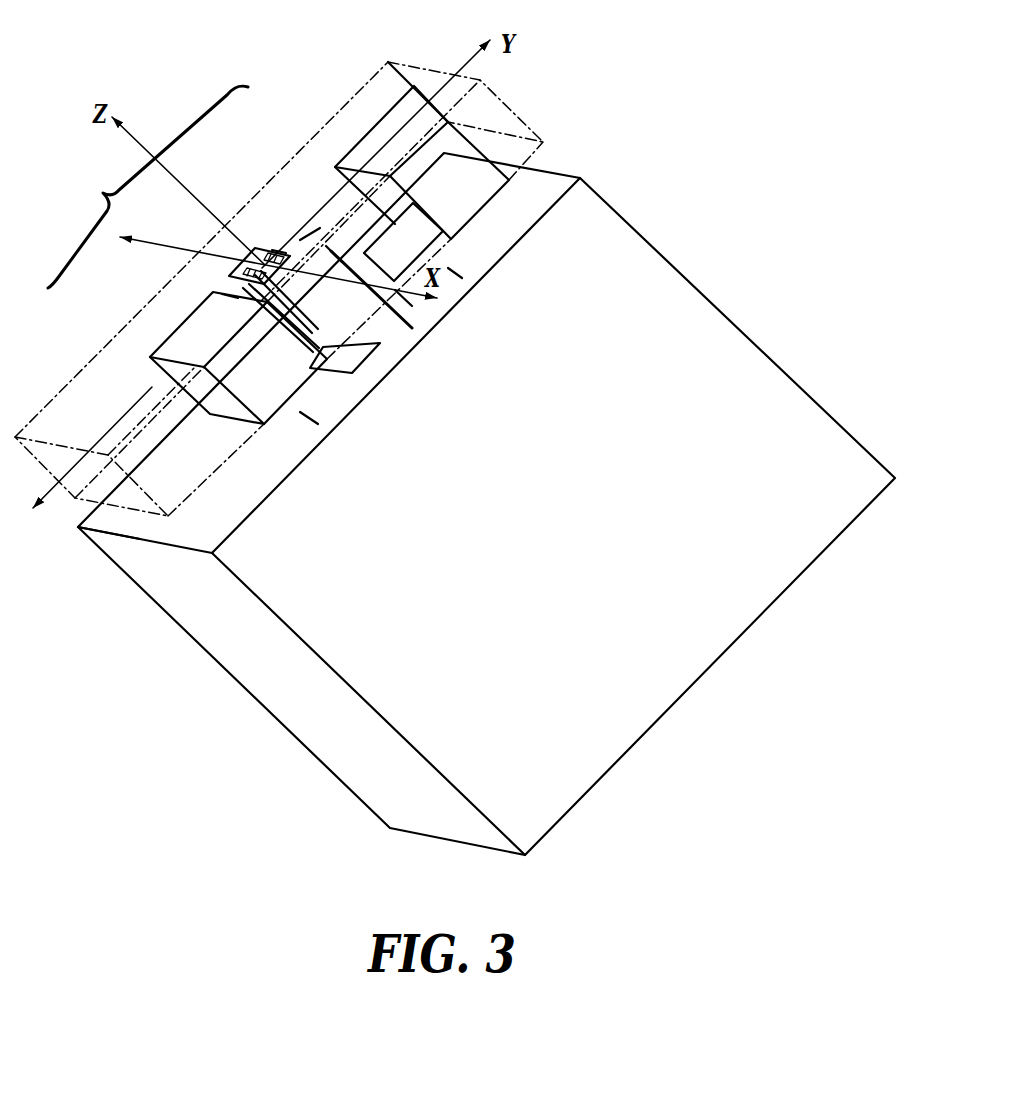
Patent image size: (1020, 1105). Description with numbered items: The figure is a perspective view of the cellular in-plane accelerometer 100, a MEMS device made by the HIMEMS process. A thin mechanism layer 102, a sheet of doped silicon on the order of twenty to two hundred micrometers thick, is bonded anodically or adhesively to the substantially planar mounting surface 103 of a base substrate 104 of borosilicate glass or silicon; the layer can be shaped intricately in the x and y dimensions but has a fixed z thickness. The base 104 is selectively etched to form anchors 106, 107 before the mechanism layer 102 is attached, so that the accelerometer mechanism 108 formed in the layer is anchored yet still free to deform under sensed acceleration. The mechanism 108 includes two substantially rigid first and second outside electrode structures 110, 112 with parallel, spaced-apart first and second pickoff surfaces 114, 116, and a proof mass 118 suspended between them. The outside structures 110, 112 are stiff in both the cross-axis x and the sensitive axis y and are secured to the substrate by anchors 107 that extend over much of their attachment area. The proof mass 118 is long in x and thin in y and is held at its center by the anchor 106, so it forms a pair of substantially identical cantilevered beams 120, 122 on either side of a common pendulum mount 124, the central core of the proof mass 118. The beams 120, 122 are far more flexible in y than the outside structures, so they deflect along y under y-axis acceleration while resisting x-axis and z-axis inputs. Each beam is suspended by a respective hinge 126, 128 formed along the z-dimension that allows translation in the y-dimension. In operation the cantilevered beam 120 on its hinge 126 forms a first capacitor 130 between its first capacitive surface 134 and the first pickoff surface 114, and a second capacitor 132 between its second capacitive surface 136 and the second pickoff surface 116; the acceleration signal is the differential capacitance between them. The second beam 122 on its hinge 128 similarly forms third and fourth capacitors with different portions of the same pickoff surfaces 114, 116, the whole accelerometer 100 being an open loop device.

The cellular in-plane accelerometer 100 is at (280, 157).
The mechanism layer 102 is at (541, 137).
The mounting surface 103 is at (124, 525).
The base substrate 104 is at (682, 272).
The anchor 106 is at (367, 350).
The anchor 107 is at (453, 271).
The accelerometer mechanism 108 is at (148, 187).
The first outside electrode structure 110 is at (337, 175).
The second outside electrode structure 112 is at (163, 345).
The first pickoff surface 114 is at (447, 235).
The second pickoff surface 116 is at (230, 296).
The proof mass 118 is at (252, 235).
The cantilevered beam 120 is at (357, 376).
The cantilevered beam 122 is at (256, 253).
The common pendulum mount 124 is at (276, 252).
The hinge 126 is at (306, 244).
The hinge 128 is at (255, 283).
The first capacitor 130 is at (385, 316).
The second capacitor 132 is at (331, 378).
The first capacitive surface 134 is at (335, 250).
The second capacitive surface 136 is at (280, 304).